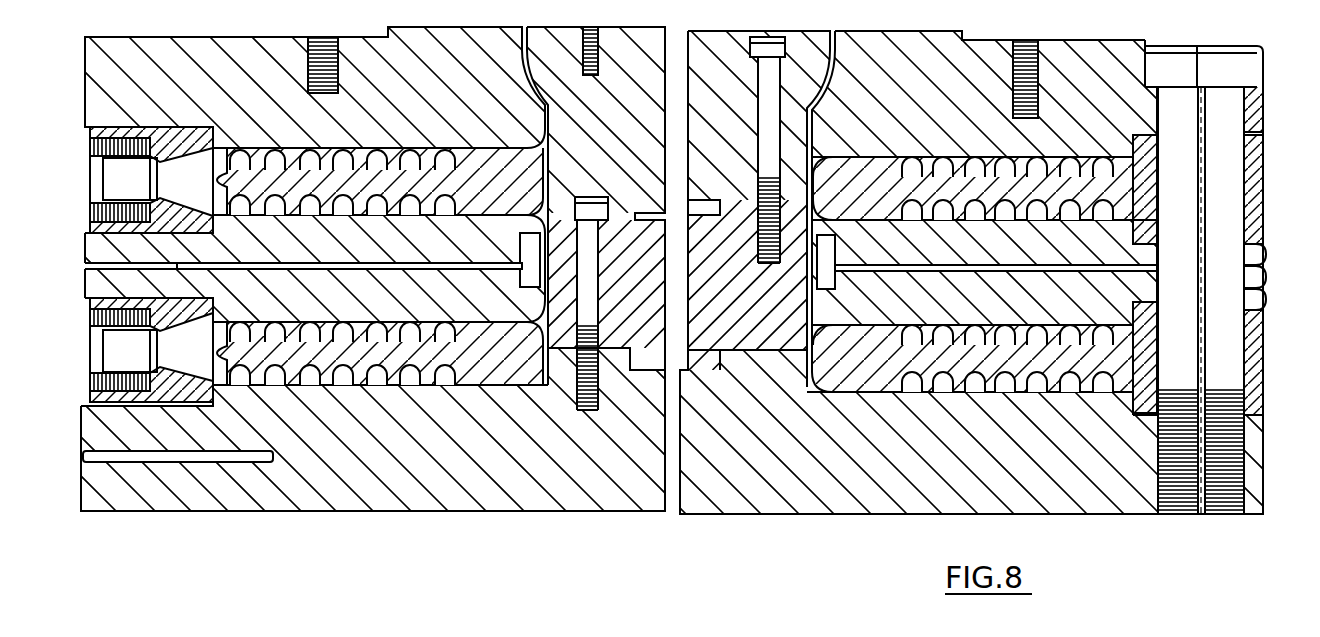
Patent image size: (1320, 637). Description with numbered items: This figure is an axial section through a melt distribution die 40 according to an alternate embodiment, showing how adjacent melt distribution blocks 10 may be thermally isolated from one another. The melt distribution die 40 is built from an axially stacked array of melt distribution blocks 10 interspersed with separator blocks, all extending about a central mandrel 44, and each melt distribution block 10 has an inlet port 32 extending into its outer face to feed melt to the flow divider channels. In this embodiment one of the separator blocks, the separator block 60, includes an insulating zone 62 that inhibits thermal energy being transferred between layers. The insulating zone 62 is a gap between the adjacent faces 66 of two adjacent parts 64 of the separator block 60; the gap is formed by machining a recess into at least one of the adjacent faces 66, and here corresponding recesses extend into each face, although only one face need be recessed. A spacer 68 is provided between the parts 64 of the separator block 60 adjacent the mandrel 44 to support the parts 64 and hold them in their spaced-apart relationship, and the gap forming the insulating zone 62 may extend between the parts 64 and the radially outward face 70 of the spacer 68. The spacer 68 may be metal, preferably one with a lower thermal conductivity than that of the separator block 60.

The melt distribution block 10 is at (1262, 182).
The inlet port 32 is at (89, 170).
The melt distribution die 40 is at (455, 516).
The central mandrel 44 is at (713, 45).
The separator block 60 is at (1270, 244).
The insulating zone 62 is at (355, 268).
The adjacent parts of the separator block 64 is at (88, 245).
The adjacent faces 66 is at (1003, 296).
The spacer 68 is at (822, 270).
The radially outward face 70 is at (520, 260).